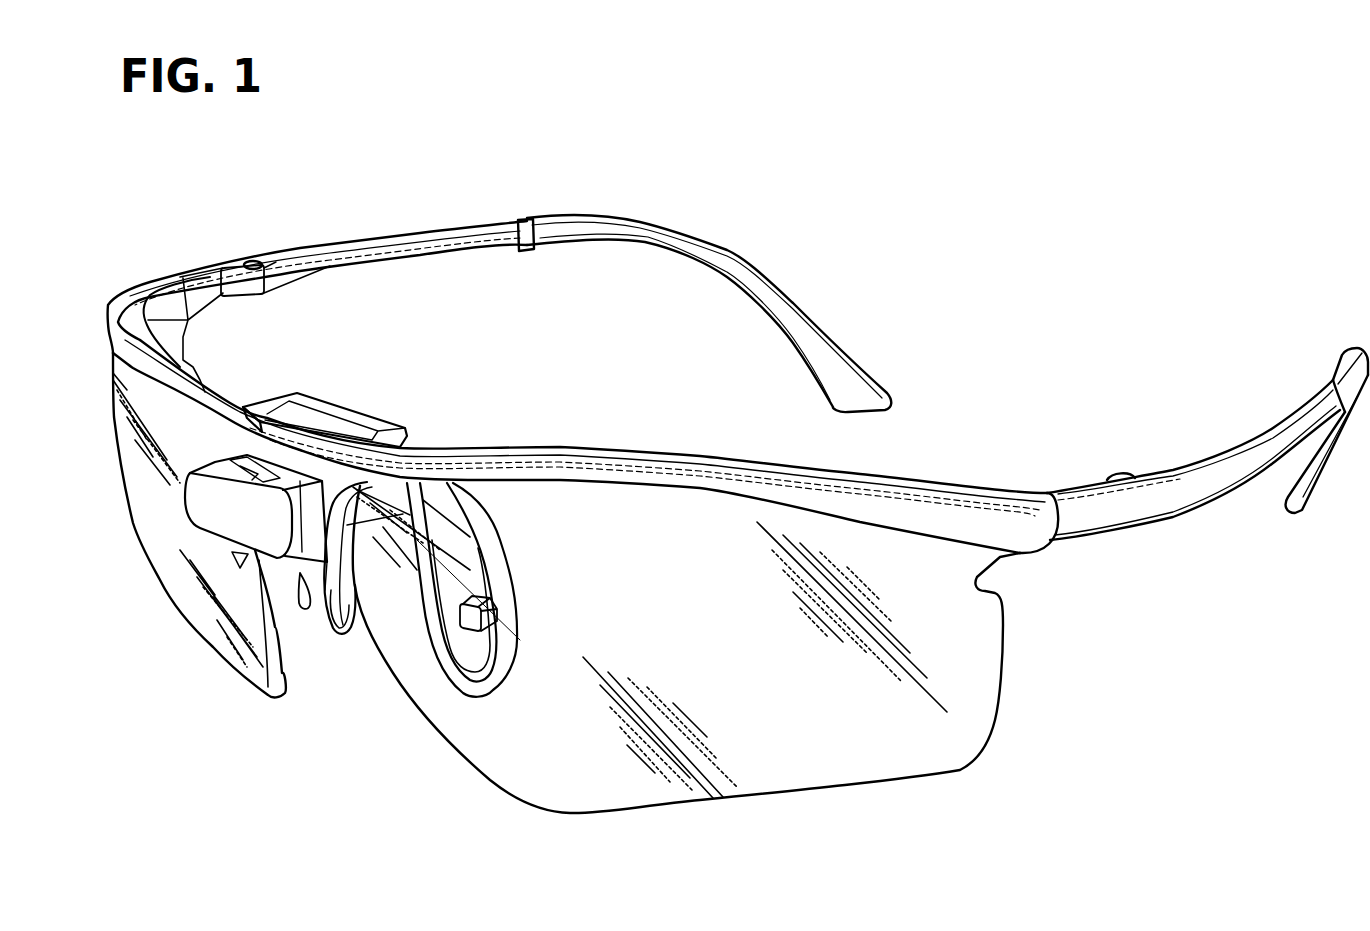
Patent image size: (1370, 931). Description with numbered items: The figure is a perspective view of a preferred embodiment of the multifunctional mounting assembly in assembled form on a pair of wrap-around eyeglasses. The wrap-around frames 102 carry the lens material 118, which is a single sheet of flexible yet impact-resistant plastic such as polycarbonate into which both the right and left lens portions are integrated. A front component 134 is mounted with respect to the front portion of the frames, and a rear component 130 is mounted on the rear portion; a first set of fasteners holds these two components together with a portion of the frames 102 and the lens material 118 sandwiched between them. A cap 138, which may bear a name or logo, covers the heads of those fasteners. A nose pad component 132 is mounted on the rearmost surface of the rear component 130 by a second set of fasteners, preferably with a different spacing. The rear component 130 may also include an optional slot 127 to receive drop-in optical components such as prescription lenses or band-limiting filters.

The wrap-around frames 102 is at (834, 316).
The lens material 118 is at (988, 677).
The slot 127 is at (247, 386).
The rear component 130 is at (358, 382).
The nose pad component 132 is at (533, 610).
The front component 134 is at (197, 522).
The cap 138 is at (187, 480).